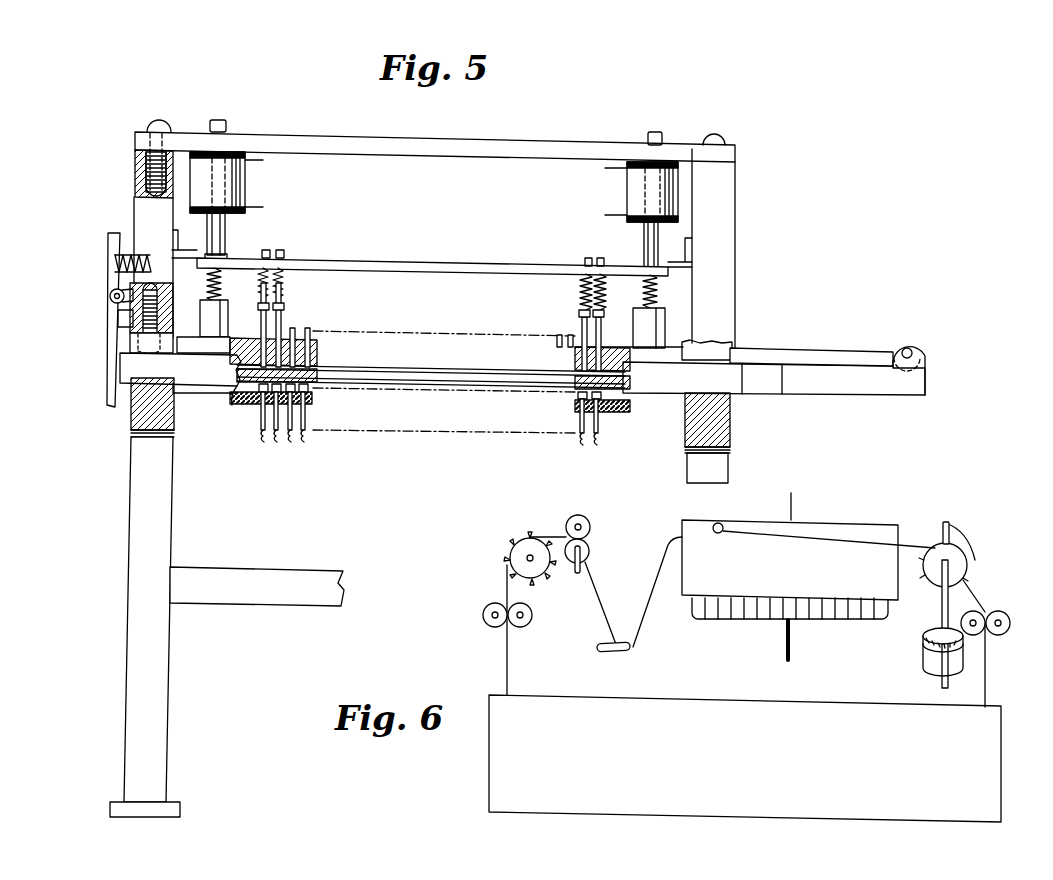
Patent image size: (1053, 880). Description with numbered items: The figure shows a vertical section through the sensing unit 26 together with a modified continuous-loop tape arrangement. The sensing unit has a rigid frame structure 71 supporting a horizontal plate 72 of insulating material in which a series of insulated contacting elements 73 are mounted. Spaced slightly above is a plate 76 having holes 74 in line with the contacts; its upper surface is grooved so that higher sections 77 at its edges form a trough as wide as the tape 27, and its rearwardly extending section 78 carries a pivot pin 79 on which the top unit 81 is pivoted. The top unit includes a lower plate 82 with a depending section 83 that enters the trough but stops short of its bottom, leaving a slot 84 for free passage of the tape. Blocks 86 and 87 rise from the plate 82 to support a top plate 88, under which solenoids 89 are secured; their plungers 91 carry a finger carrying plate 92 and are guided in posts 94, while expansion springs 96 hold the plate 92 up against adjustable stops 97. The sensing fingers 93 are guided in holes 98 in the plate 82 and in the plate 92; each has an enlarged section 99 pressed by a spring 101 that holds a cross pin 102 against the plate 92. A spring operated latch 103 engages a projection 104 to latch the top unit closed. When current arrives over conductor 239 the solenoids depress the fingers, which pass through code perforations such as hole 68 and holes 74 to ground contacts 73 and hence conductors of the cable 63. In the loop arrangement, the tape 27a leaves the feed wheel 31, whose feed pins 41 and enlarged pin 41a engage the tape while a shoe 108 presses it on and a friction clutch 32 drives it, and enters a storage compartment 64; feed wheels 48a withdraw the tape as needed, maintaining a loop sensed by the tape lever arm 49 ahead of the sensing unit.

In FIG. 5, the top unit 81 is at (533, 136).
In FIG. 5, the top plate 88 is at (413, 143).
In FIG. 5, the block 86 is at (140, 208).
In FIG. 5, the block 87 is at (716, 207).
In FIG. 5, the plunger 91 is at (222, 122).
In FIG. 5, the solenoid 89 is at (246, 186).
In FIG. 5, the adjustable stop 97 is at (178, 242).
In FIG. 5, the finger carrying plate 92 is at (431, 263).
In FIG. 5, the cross pin 102 is at (270, 250).
In FIG. 5, the spring 101 is at (286, 281).
In FIG. 5, the expansion spring 96 is at (221, 288).
In FIG. 5, the post 94 is at (218, 327).
In FIG. 5, the higher section 77 is at (190, 360).
In FIG. 5, the lower plate 82 is at (800, 354).
In FIG. 5, the rearwardly extending section 78 is at (882, 385).
In FIG. 5, the pivot pin 79 is at (909, 348).
In FIG. 5, the spring operated latch 103 is at (110, 310).
In FIG. 5, the sensing unit 26 is at (128, 430).
In FIG. 6, the sensing unit 26 is at (842, 534).
In FIG. 5, the projection 104 is at (122, 374).
In FIG. 5, the hole 98 is at (207, 375).
In FIG. 5, the horizontal plate 72 is at (205, 397).
In FIG. 5, the plate 76 is at (240, 392).
In FIG. 5, the frame structure 71 is at (172, 514).
In FIG. 5, the hole 68 is at (318, 357).
In FIG. 5, the tape 27 is at (362, 368).
In FIG. 5, the slot 84 is at (402, 380).
In FIG. 5, the depending section 83 is at (470, 356).
In FIG. 5, the hole 74 is at (315, 378).
In FIG. 5, the enlarged section 99 is at (270, 322).
In FIG. 5, the sensing finger 93 is at (307, 333).
In FIG. 5, the contacting element 73 is at (285, 424).
In FIG. 6, the storage compartment 64 is at (829, 703).
In FIG. 6, the conductor 239 is at (791, 505).
In FIG. 6, the cable 63 is at (780, 642).
In FIG. 6, the tape 27a is at (509, 675).
In FIG. 6, the feed wheel 48a is at (585, 552).
In FIG. 6, the tape lever arm 49 is at (606, 655).
In FIG. 6, the feed wheel 31 is at (958, 554).
In FIG. 6, the feed pin 41 is at (928, 580).
In FIG. 6, the enlarged pin 41a is at (950, 545).
In FIG. 6, the shoe 108 is at (928, 527).
In FIG. 6, the friction clutch 32 is at (925, 651).